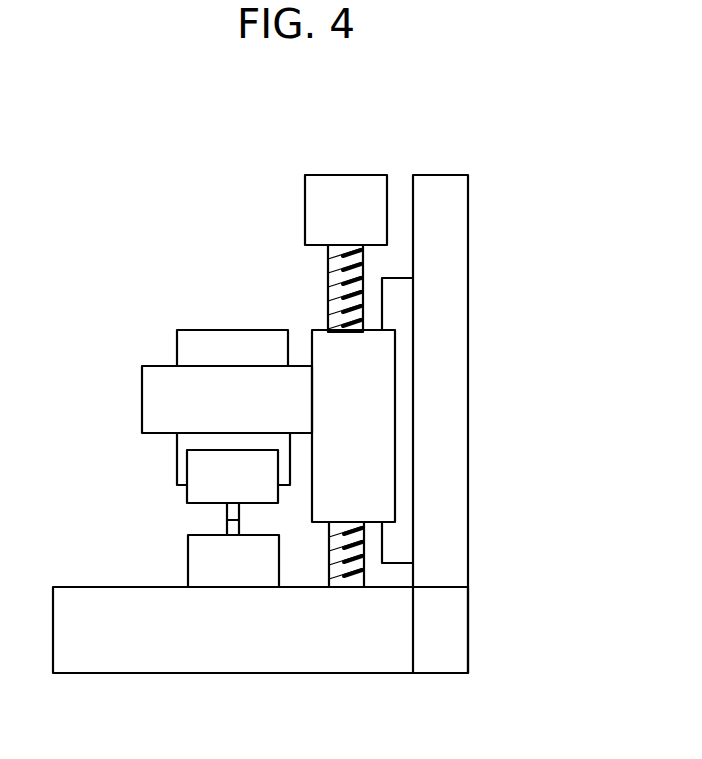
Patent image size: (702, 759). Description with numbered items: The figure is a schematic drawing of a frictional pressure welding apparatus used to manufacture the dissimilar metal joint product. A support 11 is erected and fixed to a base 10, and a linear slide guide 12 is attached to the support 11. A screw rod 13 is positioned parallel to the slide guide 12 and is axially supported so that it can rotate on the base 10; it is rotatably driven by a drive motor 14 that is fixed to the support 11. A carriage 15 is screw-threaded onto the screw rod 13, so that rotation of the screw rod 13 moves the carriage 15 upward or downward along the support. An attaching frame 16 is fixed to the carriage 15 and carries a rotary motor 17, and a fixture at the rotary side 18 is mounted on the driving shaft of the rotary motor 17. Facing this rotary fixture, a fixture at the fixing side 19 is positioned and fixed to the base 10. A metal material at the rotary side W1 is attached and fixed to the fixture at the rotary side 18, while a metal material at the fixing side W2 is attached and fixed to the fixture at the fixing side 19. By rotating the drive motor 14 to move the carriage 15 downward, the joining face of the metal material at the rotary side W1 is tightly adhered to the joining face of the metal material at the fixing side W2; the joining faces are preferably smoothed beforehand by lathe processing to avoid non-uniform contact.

The base 10 is at (320, 658).
The support 11 is at (459, 467).
The linear slide guide 12 is at (402, 303).
The screw rod 13 is at (365, 558).
The drive motor 14 is at (345, 210).
The carriage 15 is at (384, 428).
The attaching frame 16 is at (155, 400).
The rotary motor 17 is at (222, 347).
The fixture at the rotary side 18 is at (202, 478).
The fixture at the fixing side 19 is at (212, 572).
The metal material at the rotary side W1 is at (227, 513).
The metal material at the fixing side W2 is at (227, 525).